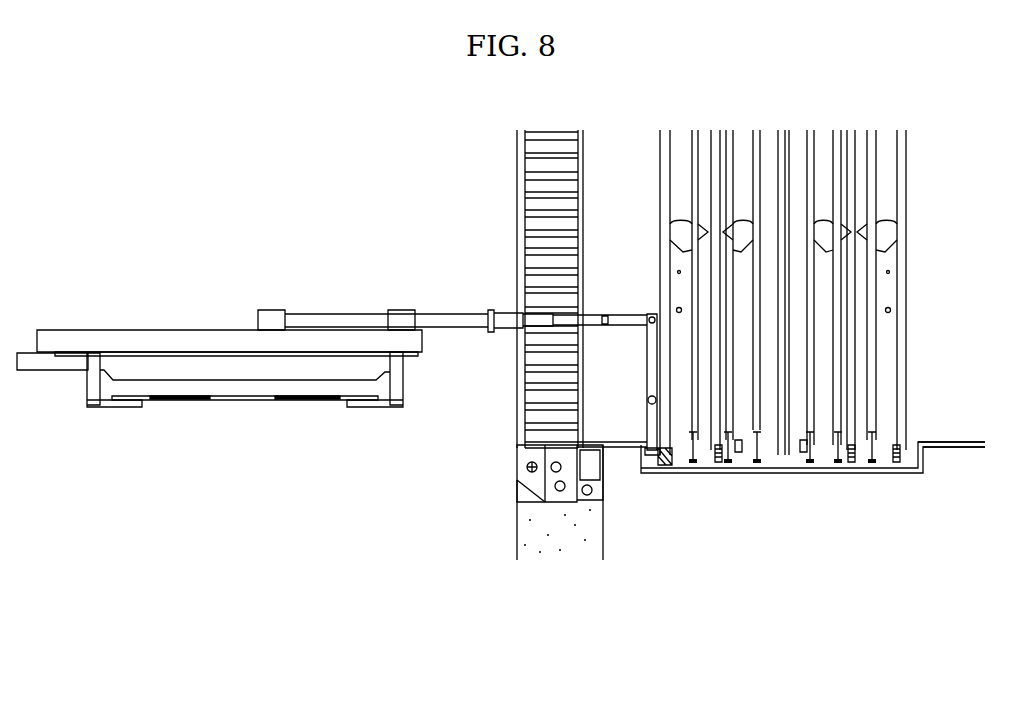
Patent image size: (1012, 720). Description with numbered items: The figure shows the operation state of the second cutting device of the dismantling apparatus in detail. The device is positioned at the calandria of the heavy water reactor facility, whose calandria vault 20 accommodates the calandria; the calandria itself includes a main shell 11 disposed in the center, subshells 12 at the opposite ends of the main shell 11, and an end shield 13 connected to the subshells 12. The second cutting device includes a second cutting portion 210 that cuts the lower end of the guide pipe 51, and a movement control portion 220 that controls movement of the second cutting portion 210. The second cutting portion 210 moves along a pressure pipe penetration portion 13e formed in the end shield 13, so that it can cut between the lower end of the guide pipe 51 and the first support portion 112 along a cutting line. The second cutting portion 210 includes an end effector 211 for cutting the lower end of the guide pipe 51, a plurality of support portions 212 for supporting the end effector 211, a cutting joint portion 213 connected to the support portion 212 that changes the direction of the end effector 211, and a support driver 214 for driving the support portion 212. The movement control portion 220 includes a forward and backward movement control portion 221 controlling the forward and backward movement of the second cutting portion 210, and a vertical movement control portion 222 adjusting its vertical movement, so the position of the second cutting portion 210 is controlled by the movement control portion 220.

The end shield 13 is at (515, 136).
The pressure pipe penetration portion 13e is at (520, 334).
The calandria vault 20 is at (522, 520).
The support driver 214 is at (293, 330).
The movement control portion 220 is at (451, 209).
The forward and backward movement control portion 221 is at (313, 315).
The vertical movement control portion 222 is at (443, 315).
The second cutting portion 210 is at (658, 637).
The support portion 212 is at (625, 328).
The cutting joint portion 213 is at (646, 326).
The end effector 211 is at (645, 457).
The main shell 11 is at (893, 470).
The subshell 12 is at (950, 448).
The guide pipe 51 is at (760, 418).
The first support portion 112 is at (752, 473).